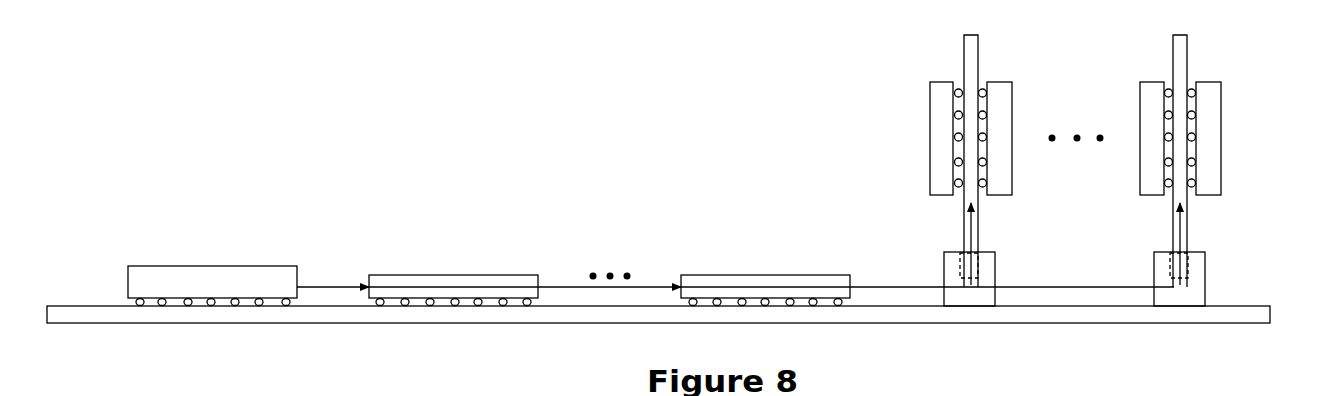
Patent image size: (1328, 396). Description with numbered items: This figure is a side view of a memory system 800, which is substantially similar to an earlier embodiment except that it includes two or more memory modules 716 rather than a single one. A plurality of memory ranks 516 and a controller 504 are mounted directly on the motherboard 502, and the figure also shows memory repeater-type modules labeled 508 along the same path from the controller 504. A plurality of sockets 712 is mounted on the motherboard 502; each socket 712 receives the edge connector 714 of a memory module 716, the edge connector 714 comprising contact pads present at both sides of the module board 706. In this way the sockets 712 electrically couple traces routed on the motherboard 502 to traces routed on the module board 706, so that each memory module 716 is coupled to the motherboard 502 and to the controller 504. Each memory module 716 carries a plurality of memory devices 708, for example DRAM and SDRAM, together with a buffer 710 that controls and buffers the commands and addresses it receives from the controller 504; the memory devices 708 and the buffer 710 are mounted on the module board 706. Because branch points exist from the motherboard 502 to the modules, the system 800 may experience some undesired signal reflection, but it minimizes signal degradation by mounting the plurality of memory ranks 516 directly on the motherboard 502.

The memory system 800 is at (340, 130).
The motherboard 502 is at (207, 323).
The controller 504 is at (128, 287).
The memory repeater module 508 is at (517, 275).
The memory ranks 516 is at (403, 262).
The module board 706 is at (979, 47).
The memory devices 708 is at (1013, 172).
The buffer 710 is at (930, 105).
The sockets 712 is at (944, 270).
The edge connector 714 is at (986, 268).
The memory module 716 is at (1242, 98).